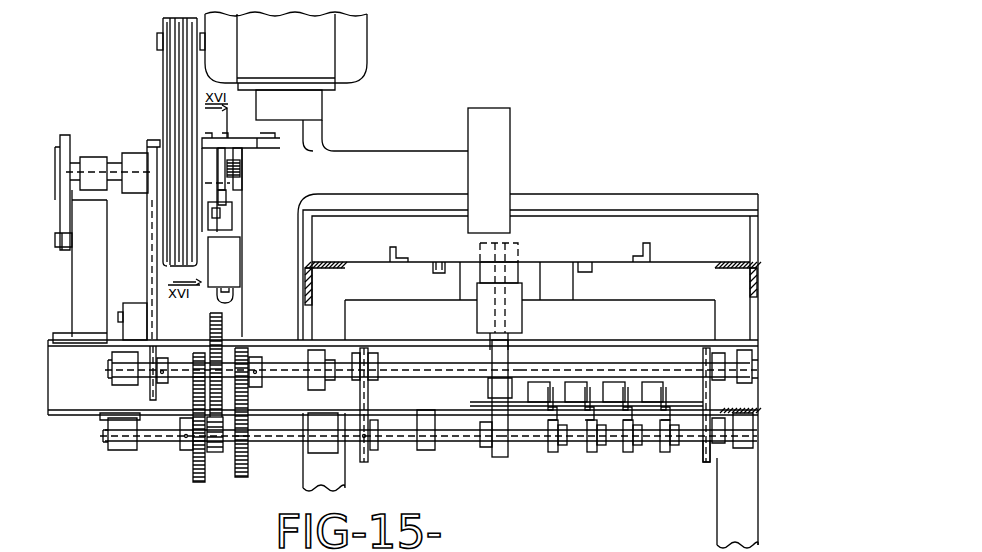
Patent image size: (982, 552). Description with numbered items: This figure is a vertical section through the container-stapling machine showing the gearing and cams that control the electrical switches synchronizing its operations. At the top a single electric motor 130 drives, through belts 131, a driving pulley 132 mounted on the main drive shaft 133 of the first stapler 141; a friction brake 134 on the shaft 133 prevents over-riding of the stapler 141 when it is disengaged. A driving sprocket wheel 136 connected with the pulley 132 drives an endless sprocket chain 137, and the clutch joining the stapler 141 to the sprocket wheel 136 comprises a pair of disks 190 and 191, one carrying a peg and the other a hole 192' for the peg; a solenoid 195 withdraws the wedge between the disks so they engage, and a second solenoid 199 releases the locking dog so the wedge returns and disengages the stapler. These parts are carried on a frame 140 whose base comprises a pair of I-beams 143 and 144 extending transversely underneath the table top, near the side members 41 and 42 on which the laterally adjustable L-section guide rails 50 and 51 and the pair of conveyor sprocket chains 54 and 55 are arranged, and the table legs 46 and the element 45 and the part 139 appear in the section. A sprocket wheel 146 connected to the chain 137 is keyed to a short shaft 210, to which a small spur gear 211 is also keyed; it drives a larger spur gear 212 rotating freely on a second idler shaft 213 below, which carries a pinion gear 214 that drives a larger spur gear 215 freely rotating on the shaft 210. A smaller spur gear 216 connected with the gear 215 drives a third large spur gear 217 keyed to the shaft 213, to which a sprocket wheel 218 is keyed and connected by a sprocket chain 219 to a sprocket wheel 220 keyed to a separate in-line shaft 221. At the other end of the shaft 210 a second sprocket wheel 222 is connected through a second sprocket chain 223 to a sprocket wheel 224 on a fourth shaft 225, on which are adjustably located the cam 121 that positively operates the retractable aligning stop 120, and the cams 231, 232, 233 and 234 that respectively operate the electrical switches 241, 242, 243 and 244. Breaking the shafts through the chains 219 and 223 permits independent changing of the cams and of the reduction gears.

The electric motor 130 is at (377, 42).
The belts 131 is at (166, 72).
The driving pulley 132 is at (163, 88).
The main drive shaft 133 is at (112, 165).
The friction brake 134 is at (62, 140).
The driving sprocket wheel 136 is at (150, 142).
The sprocket chain 137 is at (150, 238).
The block 139 is at (147, 318).
The frame 140 is at (318, 118).
The first stapler 141 is at (510, 120).
The I-beam 143 is at (227, 206).
The I-beam 144 is at (575, 342).
The sprocket wheel 146 is at (148, 392).
The clutch disk 190 is at (233, 160).
The clutch disk 191 is at (232, 170).
The hole 192' is at (269, 171).
The solenoid 195 is at (230, 268).
The second solenoid 199 is at (230, 220).
The side member 41 is at (311, 284).
The side member 42 is at (750, 282).
The table top 45 is at (660, 298).
The table legs 46 is at (345, 321).
The guide rail 50 is at (649, 248).
The guide rail 51 is at (405, 258).
The conveyor sprocket chain 54 is at (434, 267).
The conveyor sprocket chain 55 is at (605, 246).
The retractable stop 120 is at (513, 267).
The cam 121 is at (500, 450).
The short shaft 210 is at (275, 370).
The small spur gear 211 is at (248, 345).
The larger spur gear 212 is at (248, 475).
The second idler shaft 213 is at (266, 436).
The pinion gear 214 is at (215, 452).
The larger spur gear 215 is at (210, 322).
The smaller spur gear 216 is at (200, 355).
The third large spur gear 217 is at (193, 478).
The sprocket wheel 218 is at (374, 450).
The sprocket chain 219 is at (368, 400).
The sprocket wheel 220 is at (370, 360).
The shaft 221 is at (575, 345).
The second sprocket wheel 222 is at (703, 356).
The second sprocket chain 223 is at (710, 397).
The sprocket wheel 224 is at (705, 460).
The fourth shaft 225 is at (520, 445).
The cam 231 is at (553, 452).
The cam 232 is at (592, 452).
The cam 233 is at (628, 452).
The cam 234 is at (665, 452).
The electrical switch 241 is at (545, 382).
The electrical switch 242 is at (575, 382).
The electrical switch 243 is at (613, 382).
The electrical switch 244 is at (655, 388).